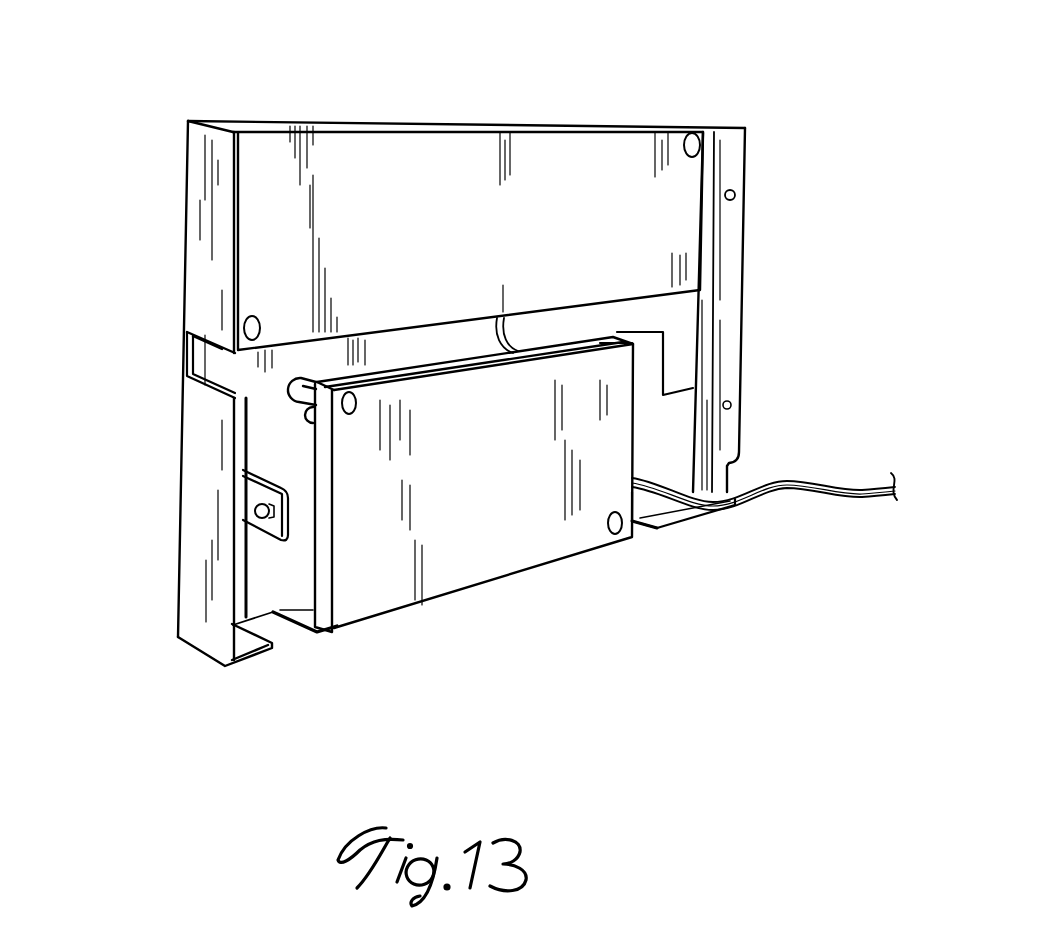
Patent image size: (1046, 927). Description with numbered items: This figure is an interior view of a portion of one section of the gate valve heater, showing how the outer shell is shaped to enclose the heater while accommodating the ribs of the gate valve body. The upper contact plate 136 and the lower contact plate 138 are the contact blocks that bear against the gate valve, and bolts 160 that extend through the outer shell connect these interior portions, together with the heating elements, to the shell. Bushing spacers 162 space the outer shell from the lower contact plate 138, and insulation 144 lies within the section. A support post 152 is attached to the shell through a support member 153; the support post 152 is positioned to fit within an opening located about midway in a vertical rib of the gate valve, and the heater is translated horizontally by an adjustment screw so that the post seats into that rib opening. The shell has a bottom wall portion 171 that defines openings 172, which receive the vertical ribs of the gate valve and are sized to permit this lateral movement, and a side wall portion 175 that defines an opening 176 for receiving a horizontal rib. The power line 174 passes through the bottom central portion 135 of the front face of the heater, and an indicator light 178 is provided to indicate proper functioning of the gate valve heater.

The bottom central portion 135 is at (742, 455).
The upper contact plate 136 is at (432, 158).
The lower contact plate 138 is at (462, 554).
The insulation 144 is at (272, 373).
The support post 152 is at (255, 512).
The support member 153 is at (267, 535).
The bolt 160 is at (250, 293).
The bushing spacer 162 is at (312, 427).
The bottom wall portion 171 is at (270, 653).
The opening 172 is at (270, 613).
The power line 174 is at (833, 496).
The side wall portion 175 is at (197, 153).
The opening 176 is at (222, 348).
The indicator light 178 is at (727, 401).